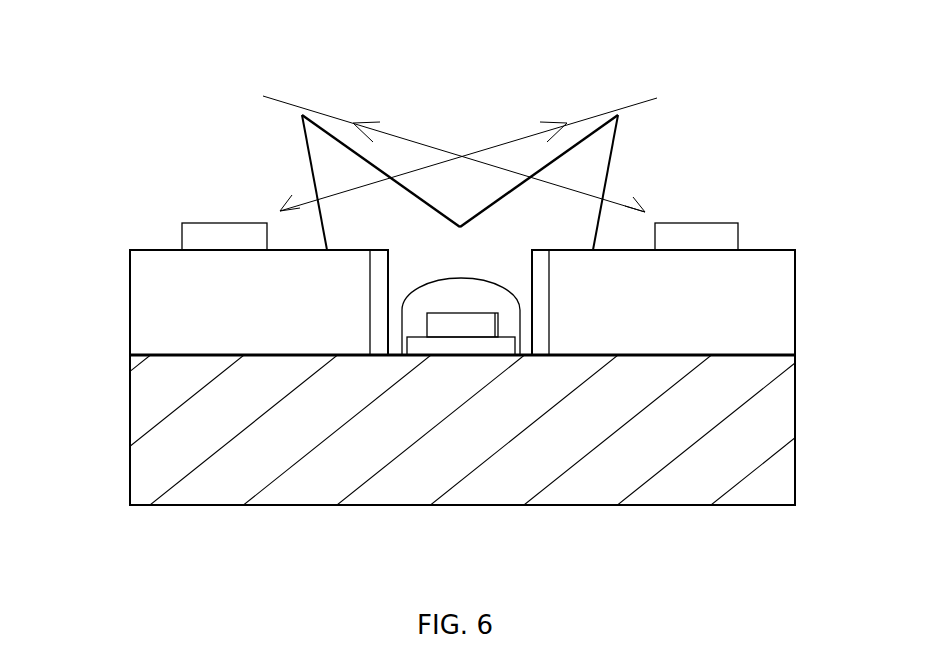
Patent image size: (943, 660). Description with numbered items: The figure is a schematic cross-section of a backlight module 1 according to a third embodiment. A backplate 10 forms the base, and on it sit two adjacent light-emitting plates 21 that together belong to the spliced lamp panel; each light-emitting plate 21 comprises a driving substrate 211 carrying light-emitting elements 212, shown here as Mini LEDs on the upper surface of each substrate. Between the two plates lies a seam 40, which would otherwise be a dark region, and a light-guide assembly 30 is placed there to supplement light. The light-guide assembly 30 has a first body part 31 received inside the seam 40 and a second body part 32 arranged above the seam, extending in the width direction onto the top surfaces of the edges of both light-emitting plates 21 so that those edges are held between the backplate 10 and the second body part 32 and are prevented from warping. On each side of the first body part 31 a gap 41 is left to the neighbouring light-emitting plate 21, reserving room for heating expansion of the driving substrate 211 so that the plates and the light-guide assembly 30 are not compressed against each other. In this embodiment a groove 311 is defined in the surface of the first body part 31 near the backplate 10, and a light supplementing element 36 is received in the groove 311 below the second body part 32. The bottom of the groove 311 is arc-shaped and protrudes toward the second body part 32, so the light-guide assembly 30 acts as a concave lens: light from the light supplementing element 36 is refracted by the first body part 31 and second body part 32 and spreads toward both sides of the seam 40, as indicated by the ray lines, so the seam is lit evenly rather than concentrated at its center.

The backlight module 1 is at (113, 32).
The backplate 10 is at (227, 483).
The light-emitting plate 21 is at (682, 235).
The driving substrate 211 is at (703, 297).
The light-emitting element 212 is at (705, 240).
The light-guide assembly 30 is at (252, 235).
The first body part 31 is at (405, 285).
The second body part 32 is at (405, 217).
The light supplementing element 36 is at (460, 327).
The groove 311 is at (490, 300).
The seam 40 is at (552, 301).
The gap 41 is at (380, 345).